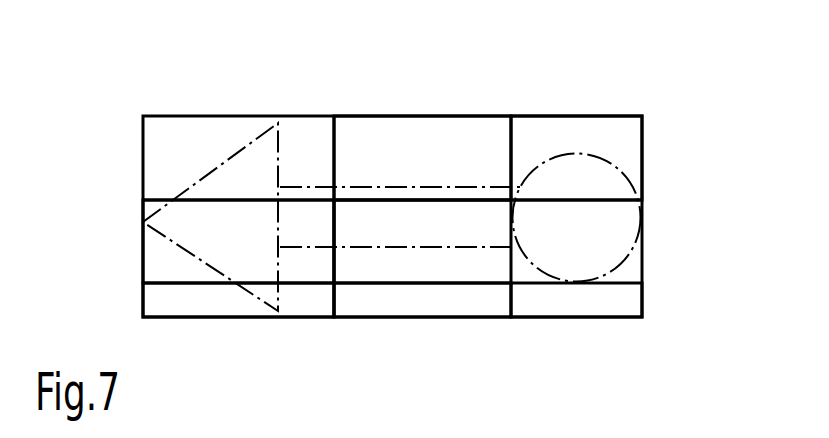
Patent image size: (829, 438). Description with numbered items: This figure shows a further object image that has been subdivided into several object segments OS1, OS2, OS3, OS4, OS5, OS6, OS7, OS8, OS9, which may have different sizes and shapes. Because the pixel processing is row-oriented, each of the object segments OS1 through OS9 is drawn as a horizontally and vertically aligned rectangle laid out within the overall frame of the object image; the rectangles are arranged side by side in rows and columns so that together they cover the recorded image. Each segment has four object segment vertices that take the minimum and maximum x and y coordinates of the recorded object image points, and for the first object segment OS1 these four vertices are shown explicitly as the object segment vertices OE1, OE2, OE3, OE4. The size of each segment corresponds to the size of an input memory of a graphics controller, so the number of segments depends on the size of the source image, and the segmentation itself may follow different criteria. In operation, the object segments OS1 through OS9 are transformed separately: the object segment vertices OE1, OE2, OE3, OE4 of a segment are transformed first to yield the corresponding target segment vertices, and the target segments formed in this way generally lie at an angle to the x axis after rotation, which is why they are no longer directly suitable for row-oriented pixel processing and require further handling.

The object segment vertex OE1 is at (138, 117).
The object segment vertex OE2 is at (335, 116).
The object segment vertex OE3 is at (142, 202).
The object segment vertex OE4 is at (333, 193).
The first object segment OS1 is at (217, 130).
The object segment OS2 is at (413, 133).
The object segment OS3 is at (586, 130).
The object segment OS4 is at (147, 252).
The object segment OS5 is at (413, 272).
The object segment OS6 is at (640, 252).
The object segment OS7 is at (303, 308).
The object segment OS8 is at (485, 307).
The object segment OS9 is at (628, 298).